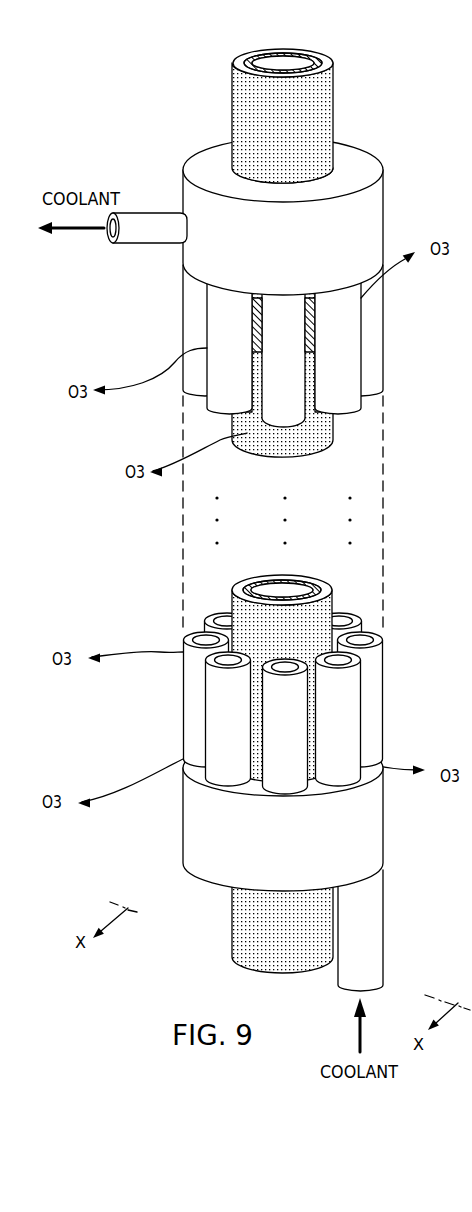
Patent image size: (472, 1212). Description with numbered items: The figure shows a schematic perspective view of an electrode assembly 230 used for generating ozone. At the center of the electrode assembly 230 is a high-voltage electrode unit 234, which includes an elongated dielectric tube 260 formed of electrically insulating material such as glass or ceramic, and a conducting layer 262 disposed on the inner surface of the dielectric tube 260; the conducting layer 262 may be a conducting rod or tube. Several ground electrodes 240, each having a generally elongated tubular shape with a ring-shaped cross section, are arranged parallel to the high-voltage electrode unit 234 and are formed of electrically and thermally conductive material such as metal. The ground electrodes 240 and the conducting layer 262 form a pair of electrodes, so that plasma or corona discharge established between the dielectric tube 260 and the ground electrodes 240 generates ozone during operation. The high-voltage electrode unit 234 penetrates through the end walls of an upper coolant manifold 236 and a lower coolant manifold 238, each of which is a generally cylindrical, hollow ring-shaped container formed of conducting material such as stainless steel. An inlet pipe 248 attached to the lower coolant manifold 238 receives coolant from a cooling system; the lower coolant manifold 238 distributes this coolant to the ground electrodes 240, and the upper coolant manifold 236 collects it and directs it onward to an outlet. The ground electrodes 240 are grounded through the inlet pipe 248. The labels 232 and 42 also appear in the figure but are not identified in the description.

The electrode assembly 230 is at (86, 38).
The housing 232 is at (466, 128).
The high-voltage electrode unit 234 is at (282, 363).
The upper coolant manifold 236 is at (375, 188).
The lower coolant manifold 238 is at (185, 830).
The ground electrodes 240 is at (191, 311).
The dielectric / electrode band 42 is at (306, 299).
The inlet pipe 248 is at (370, 948).
The dielectric tube 260 is at (252, 47).
The conducting layer 262 is at (284, 53).